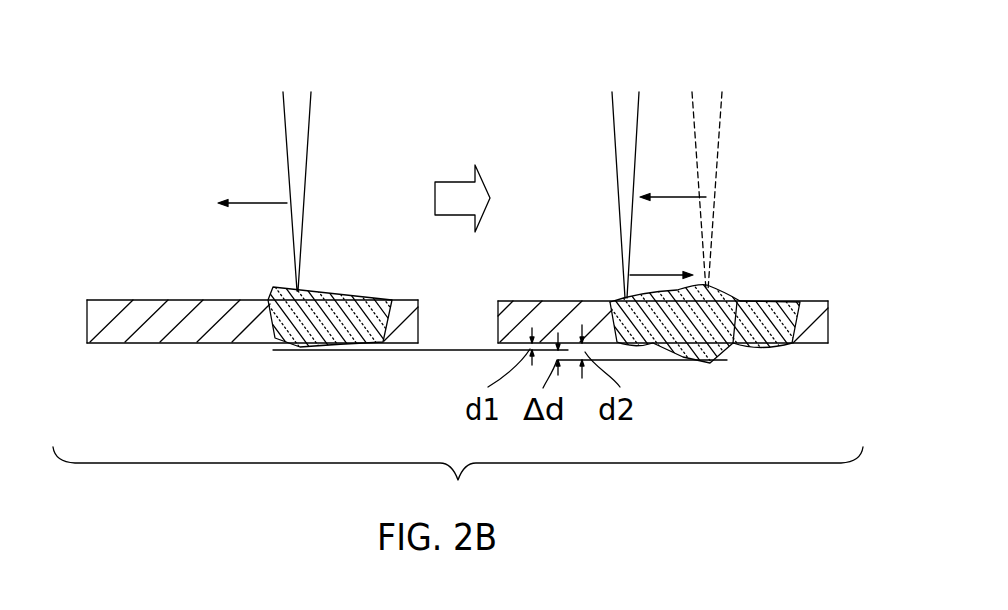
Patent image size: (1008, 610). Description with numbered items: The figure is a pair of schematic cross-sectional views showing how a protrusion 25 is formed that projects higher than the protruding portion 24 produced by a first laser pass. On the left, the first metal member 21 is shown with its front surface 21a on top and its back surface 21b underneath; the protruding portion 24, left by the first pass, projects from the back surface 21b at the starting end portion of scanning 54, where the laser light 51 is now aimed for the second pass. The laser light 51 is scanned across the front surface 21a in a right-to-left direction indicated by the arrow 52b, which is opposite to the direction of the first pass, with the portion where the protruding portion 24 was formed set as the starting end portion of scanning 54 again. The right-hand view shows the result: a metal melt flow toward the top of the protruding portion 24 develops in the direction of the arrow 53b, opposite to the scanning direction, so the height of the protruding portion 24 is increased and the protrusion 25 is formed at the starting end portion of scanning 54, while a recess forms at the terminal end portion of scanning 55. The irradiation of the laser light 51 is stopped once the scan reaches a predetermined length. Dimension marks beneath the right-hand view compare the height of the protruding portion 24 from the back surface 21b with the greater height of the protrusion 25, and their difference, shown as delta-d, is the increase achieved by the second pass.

The first metal member 21 is at (161, 320).
The front surface 21a is at (120, 300).
The back surface 21b is at (113, 343).
The protruding portion 24 is at (287, 350).
The protrusion 25 is at (707, 364).
The laser light 51 is at (307, 182).
The arrow indicating scanning direction 52b is at (246, 200).
The arrow indicating metal melt flow direction 53b is at (656, 273).
The starting end portion of scanning 54 is at (303, 288).
The terminal end portion of scanning 55 is at (618, 280).